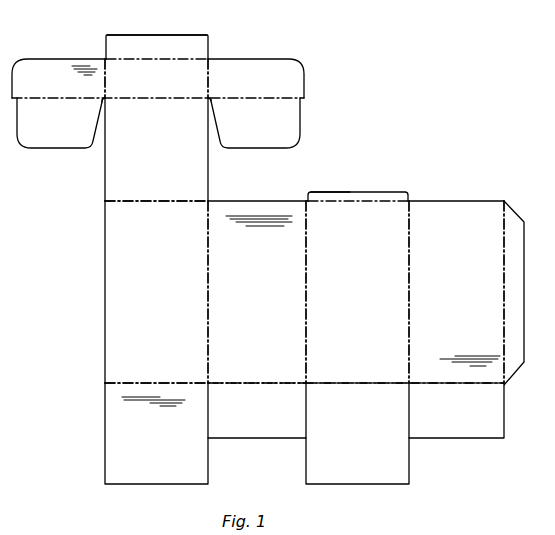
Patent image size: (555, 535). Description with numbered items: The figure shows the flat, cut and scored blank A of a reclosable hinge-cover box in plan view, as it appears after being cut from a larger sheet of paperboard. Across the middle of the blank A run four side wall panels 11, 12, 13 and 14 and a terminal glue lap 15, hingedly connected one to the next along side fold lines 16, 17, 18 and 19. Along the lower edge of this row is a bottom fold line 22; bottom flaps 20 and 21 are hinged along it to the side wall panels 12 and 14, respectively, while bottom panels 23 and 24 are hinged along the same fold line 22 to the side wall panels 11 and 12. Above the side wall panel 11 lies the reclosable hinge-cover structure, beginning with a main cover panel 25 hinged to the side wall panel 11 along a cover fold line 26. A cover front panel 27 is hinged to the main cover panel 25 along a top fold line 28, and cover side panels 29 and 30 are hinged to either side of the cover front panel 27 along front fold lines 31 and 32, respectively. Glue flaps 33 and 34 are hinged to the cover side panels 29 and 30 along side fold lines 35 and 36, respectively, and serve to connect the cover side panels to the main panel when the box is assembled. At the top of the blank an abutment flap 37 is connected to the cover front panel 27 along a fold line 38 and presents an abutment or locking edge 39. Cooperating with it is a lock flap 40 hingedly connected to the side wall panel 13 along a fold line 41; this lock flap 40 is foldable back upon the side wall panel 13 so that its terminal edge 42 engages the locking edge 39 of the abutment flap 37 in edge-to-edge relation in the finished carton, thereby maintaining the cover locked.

The blank A is at (486, 199).
The side wall panel 11 is at (163, 301).
The side wall panel 12 is at (265, 301).
The side wall panel 13 is at (366, 301).
The side wall panel 14 is at (466, 301).
The terminal glue lap 15 is at (519, 301).
The side fold line 16 is at (209, 330).
The side fold line 17 is at (307, 340).
The side fold line 18 is at (410, 352).
The side fold line 19 is at (503, 336).
The bottom flap 20 is at (259, 415).
The bottom flap 21 is at (456, 418).
The bottom fold line 22 is at (243, 384).
The bottom panel 23 is at (160, 445).
The bottom panel 24 is at (362, 436).
The main cover panel 25 is at (163, 153).
The cover fold line 26 is at (173, 202).
The cover front panel 27 is at (164, 85).
The top fold line 28 is at (157, 99).
The cover side panel 29 is at (57, 86).
The cover side panel 30 is at (264, 86).
The front fold line 31 is at (105, 78).
The front fold line 32 is at (207, 79).
The glue flap 33 is at (60, 138).
The glue flap 34 is at (250, 136).
The side fold line 35 is at (57, 99).
The side fold line 36 is at (272, 99).
The abutment flap 37 is at (160, 55).
The fold line 38 is at (195, 58).
The locking edge 39 is at (160, 35).
The lock flap 40 is at (372, 196).
The fold line 41 is at (363, 203).
The terminal edge 42 is at (328, 193).